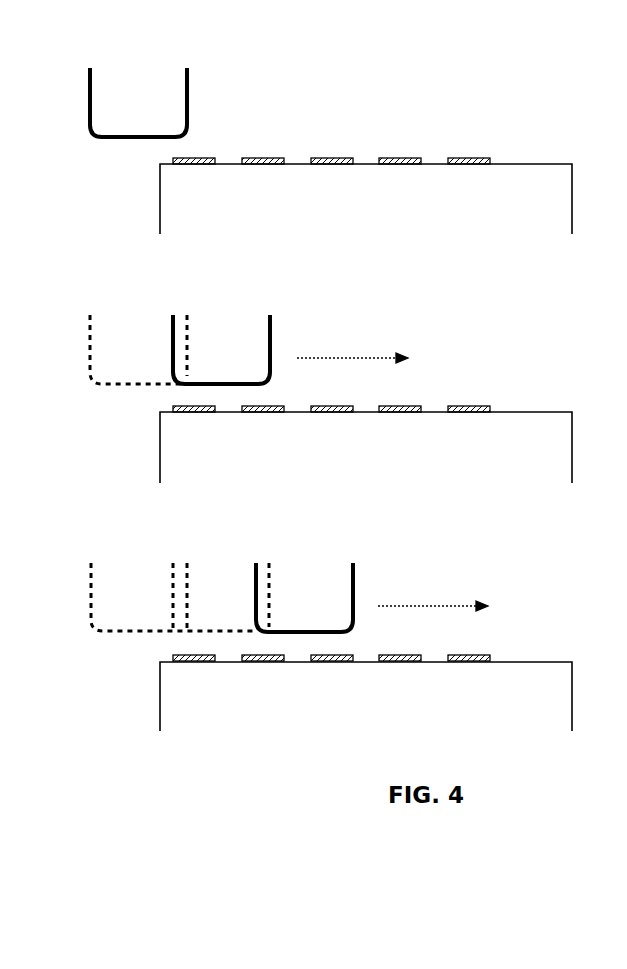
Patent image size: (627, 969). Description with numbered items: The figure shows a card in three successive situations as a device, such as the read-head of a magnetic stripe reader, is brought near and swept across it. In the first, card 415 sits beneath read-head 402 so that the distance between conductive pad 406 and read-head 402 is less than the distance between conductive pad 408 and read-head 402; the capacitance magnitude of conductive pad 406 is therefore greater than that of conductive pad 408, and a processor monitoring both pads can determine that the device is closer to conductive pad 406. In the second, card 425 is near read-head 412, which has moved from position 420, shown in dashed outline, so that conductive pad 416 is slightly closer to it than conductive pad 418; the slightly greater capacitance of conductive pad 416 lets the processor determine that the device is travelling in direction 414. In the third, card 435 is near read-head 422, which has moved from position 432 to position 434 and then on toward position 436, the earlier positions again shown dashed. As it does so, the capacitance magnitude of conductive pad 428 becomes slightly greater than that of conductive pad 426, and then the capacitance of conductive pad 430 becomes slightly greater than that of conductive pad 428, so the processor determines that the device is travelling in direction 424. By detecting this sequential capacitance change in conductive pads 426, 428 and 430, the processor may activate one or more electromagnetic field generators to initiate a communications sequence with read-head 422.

The read-head 402 is at (90, 84).
The conductive pad 406 is at (176, 159).
The conductive pad 408 is at (245, 159).
The card 415 is at (381, 220).
The read-head 412 is at (173, 332).
The direction 414 is at (312, 358).
The conductive pad 416 is at (176, 407).
The conductive pad 418 is at (245, 407).
The position 420 is at (100, 368).
The card 425 is at (381, 470).
The read-head 422 is at (256, 578).
The direction 424 is at (393, 606).
The conductive pad 426 is at (176, 656).
The conductive pad 428 is at (245, 656).
The conductive pad 430 is at (314, 656).
The position 432 is at (100, 615).
The position 434 is at (212, 578).
The card 435 is at (381, 718).
The position 436 is at (312, 578).